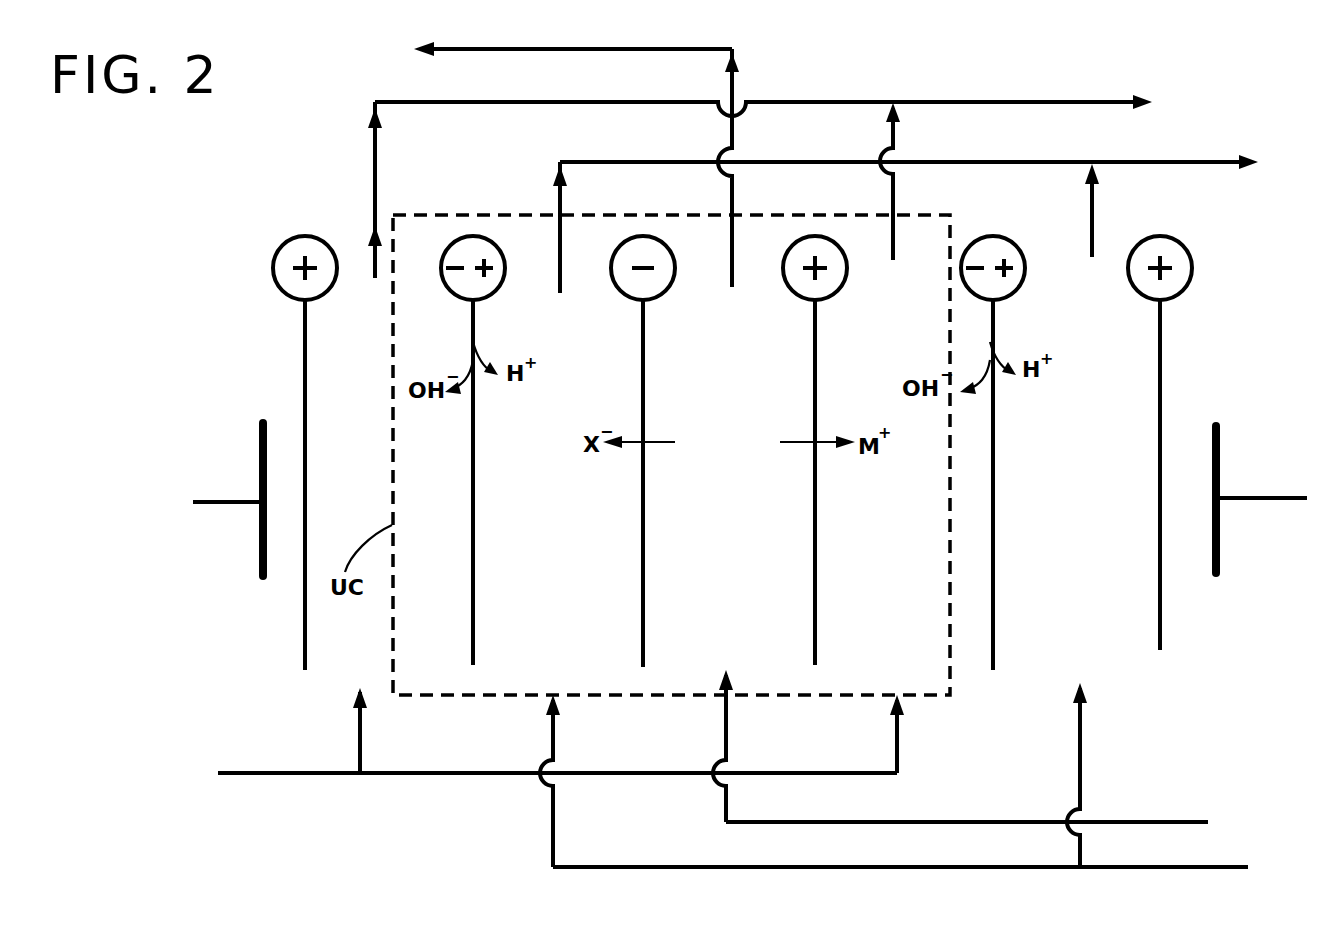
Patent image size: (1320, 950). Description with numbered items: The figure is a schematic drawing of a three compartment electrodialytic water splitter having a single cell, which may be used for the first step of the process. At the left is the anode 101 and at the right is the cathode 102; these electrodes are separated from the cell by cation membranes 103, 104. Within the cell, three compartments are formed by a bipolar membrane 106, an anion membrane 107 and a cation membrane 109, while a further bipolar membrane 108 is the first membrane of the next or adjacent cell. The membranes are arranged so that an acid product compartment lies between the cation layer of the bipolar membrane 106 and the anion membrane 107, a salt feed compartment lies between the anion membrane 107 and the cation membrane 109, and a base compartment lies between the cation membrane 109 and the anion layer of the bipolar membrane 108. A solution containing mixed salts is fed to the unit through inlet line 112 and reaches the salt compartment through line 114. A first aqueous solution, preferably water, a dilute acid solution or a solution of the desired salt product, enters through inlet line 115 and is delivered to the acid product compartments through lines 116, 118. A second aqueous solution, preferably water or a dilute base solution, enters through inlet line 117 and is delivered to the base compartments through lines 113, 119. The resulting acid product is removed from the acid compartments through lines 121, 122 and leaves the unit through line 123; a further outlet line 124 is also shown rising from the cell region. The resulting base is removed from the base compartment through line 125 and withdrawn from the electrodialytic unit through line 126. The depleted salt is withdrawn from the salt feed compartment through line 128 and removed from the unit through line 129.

The anode 101 is at (263, 470).
The cathode 102 is at (1216, 464).
The cation membrane 103 is at (305, 318).
The cation membrane 104 is at (1162, 331).
The bipolar membrane 106 is at (475, 318).
The anion membrane 107 is at (645, 318).
The bipolar membrane 108 is at (993, 320).
The cation membrane 109 is at (818, 331).
The inlet line 112 is at (1148, 820).
The line 113 is at (360, 745).
The line 114 is at (728, 720).
The inlet line 115 is at (1218, 864).
The line 116 is at (1082, 762).
The inlet line 117 is at (243, 771).
The line 118 is at (555, 740).
The line 119 is at (900, 738).
The line 121 is at (558, 192).
The line 122 is at (1094, 210).
The line 123 is at (1192, 161).
The outlet 124 is at (374, 145).
The line 125 is at (895, 196).
The line 126 is at (1085, 101).
The line 128 is at (735, 125).
The line 129 is at (505, 48).